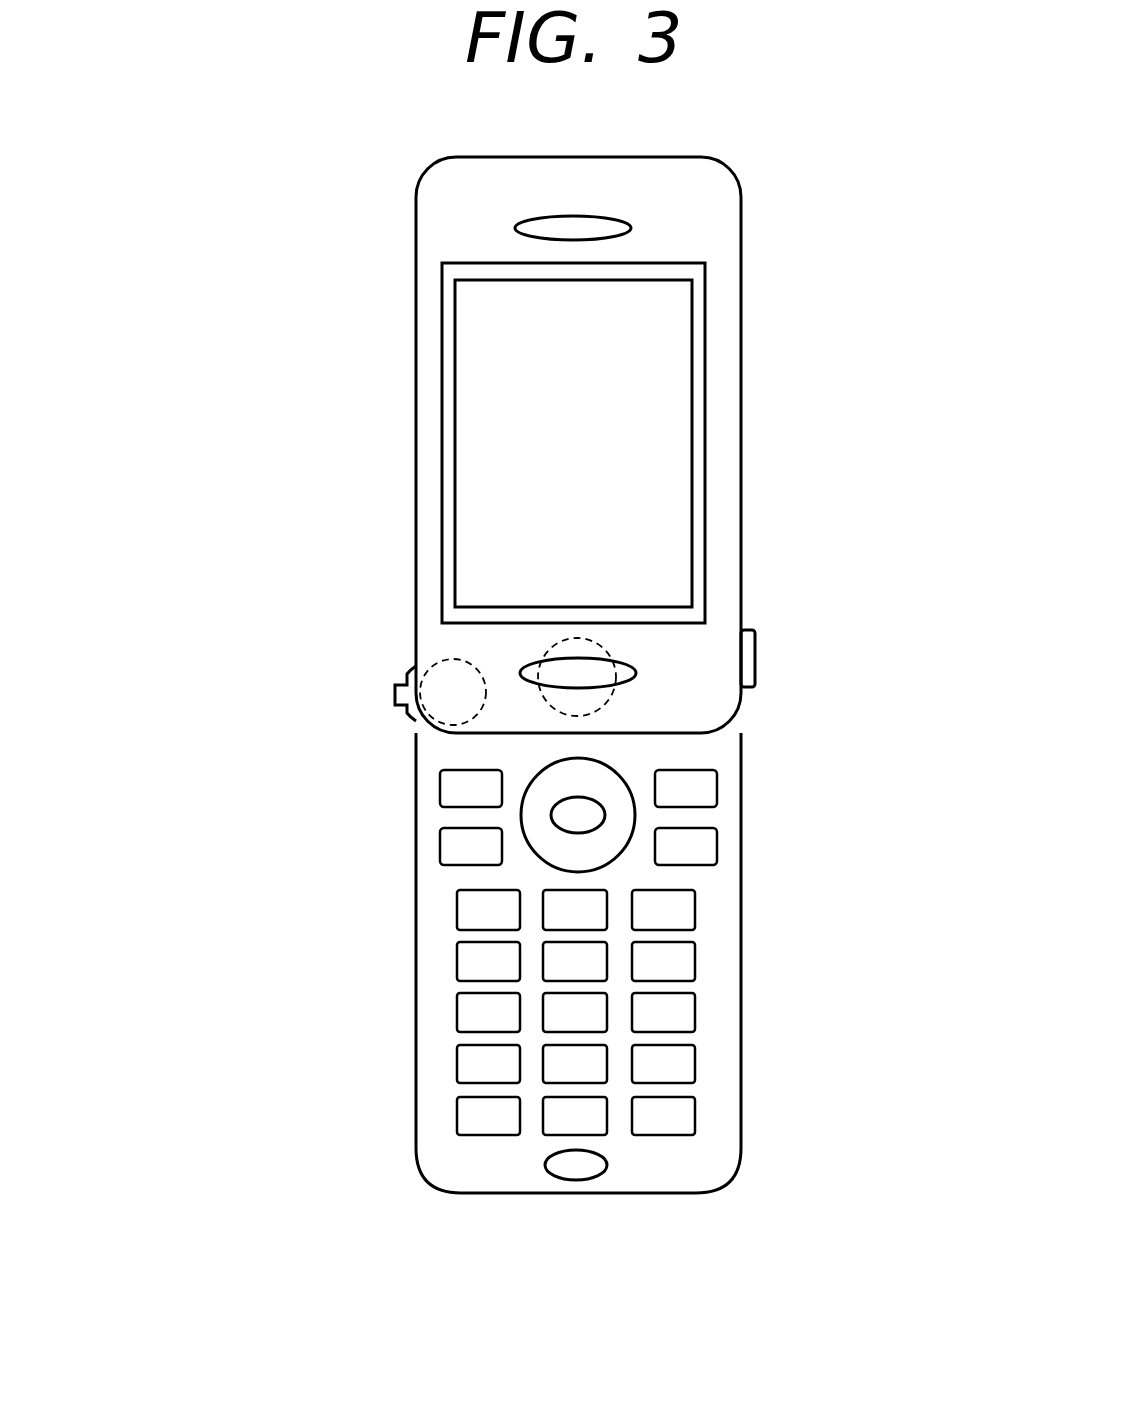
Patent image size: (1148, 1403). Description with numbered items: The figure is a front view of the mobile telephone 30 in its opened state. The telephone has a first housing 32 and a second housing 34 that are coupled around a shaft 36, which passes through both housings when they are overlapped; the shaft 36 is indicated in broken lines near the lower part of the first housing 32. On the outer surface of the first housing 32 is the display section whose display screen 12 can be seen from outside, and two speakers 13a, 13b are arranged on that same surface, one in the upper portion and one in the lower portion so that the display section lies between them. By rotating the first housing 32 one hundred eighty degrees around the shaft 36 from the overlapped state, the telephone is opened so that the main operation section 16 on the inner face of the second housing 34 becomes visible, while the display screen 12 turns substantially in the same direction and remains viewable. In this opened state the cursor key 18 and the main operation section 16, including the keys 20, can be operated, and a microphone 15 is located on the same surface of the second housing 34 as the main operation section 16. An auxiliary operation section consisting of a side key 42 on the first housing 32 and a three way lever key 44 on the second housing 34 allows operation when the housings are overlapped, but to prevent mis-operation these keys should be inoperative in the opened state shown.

The mobile telephone 30 is at (226, 958).
The first housing 32 is at (427, 363).
The second housing 34 is at (428, 1018).
The display screen 12 is at (660, 438).
The speaker 13a is at (610, 225).
The speaker 13b is at (637, 673).
The shaft 36 is at (553, 640).
The side key 42 is at (745, 657).
The three way lever key 44 is at (393, 693).
The cursor key 18 is at (580, 803).
The main operation section 16 is at (666, 952).
The keys 20 is at (674, 1012).
The microphone 15 is at (590, 1163).